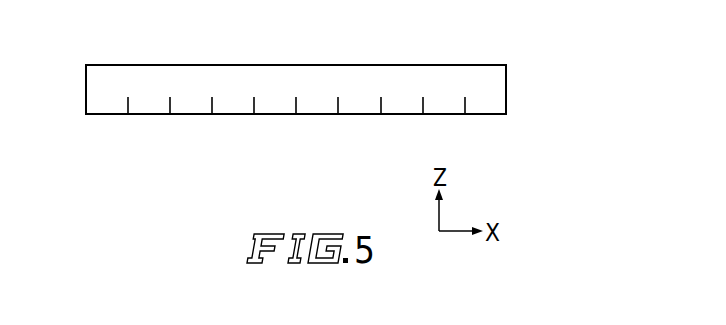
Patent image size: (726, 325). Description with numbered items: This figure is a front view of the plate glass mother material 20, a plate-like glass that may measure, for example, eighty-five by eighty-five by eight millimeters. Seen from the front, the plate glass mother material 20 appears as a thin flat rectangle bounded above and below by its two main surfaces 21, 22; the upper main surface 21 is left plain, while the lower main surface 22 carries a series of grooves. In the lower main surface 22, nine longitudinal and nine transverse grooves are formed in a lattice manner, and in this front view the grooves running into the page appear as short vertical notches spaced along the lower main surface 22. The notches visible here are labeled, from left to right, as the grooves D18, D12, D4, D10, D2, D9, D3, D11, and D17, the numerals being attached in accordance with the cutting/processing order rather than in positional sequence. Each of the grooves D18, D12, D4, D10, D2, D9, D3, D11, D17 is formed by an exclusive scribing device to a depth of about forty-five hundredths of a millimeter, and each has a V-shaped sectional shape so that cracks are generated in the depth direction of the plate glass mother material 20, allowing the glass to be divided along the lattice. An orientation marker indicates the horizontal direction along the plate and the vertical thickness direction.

The plate glass mother material 20 is at (498, 44).
The main surface 21 is at (328, 65).
The lower main surface 22 is at (483, 114).
The groove D18 is at (129, 115).
The groove D12 is at (170, 115).
The groove D4 is at (212, 115).
The groove D10 is at (254, 115).
The groove D2 is at (296, 115).
The groove D9 is at (338, 115).
The groove D3 is at (381, 115).
The groove D11 is at (423, 115).
The groove D17 is at (465, 115).